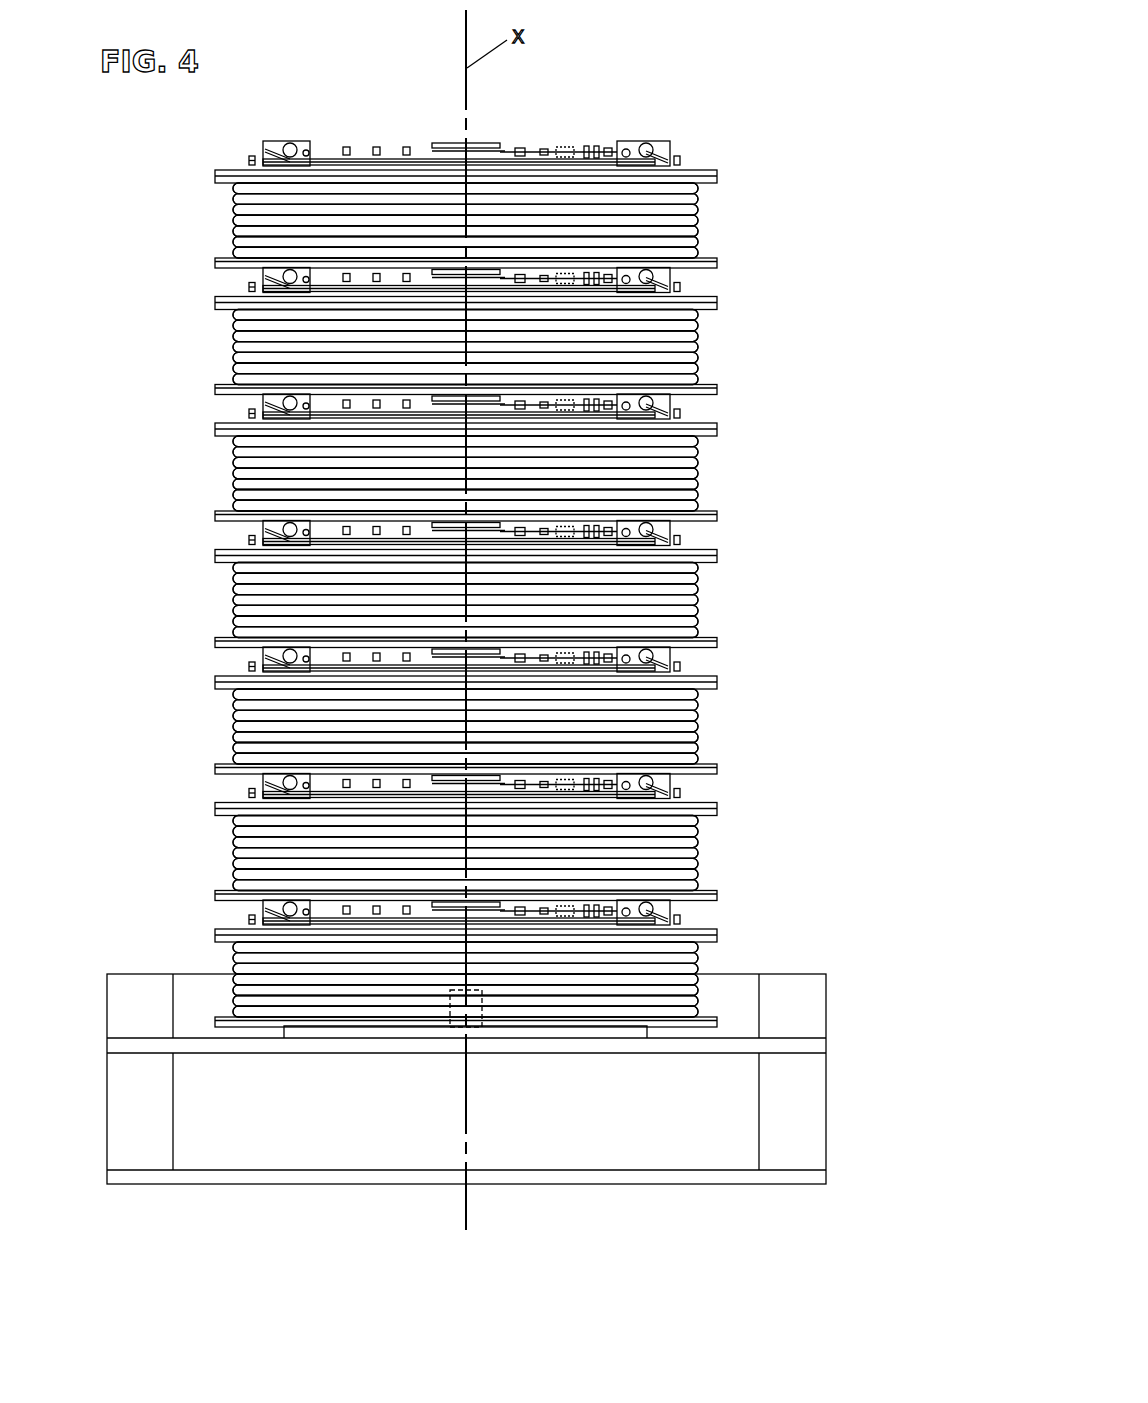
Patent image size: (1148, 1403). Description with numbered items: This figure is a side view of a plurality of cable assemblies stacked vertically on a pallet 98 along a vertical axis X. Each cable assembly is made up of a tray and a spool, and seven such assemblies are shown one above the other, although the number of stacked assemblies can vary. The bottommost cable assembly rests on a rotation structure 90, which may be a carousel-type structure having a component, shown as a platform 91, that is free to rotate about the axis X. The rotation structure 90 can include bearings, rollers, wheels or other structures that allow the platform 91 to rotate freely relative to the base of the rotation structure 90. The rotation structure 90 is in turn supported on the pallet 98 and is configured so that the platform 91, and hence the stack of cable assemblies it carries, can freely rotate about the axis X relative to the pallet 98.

The pallet 98 is at (835, 1007).
The platform 91 is at (635, 1033).
The rotation structure 90 is at (440, 1035).